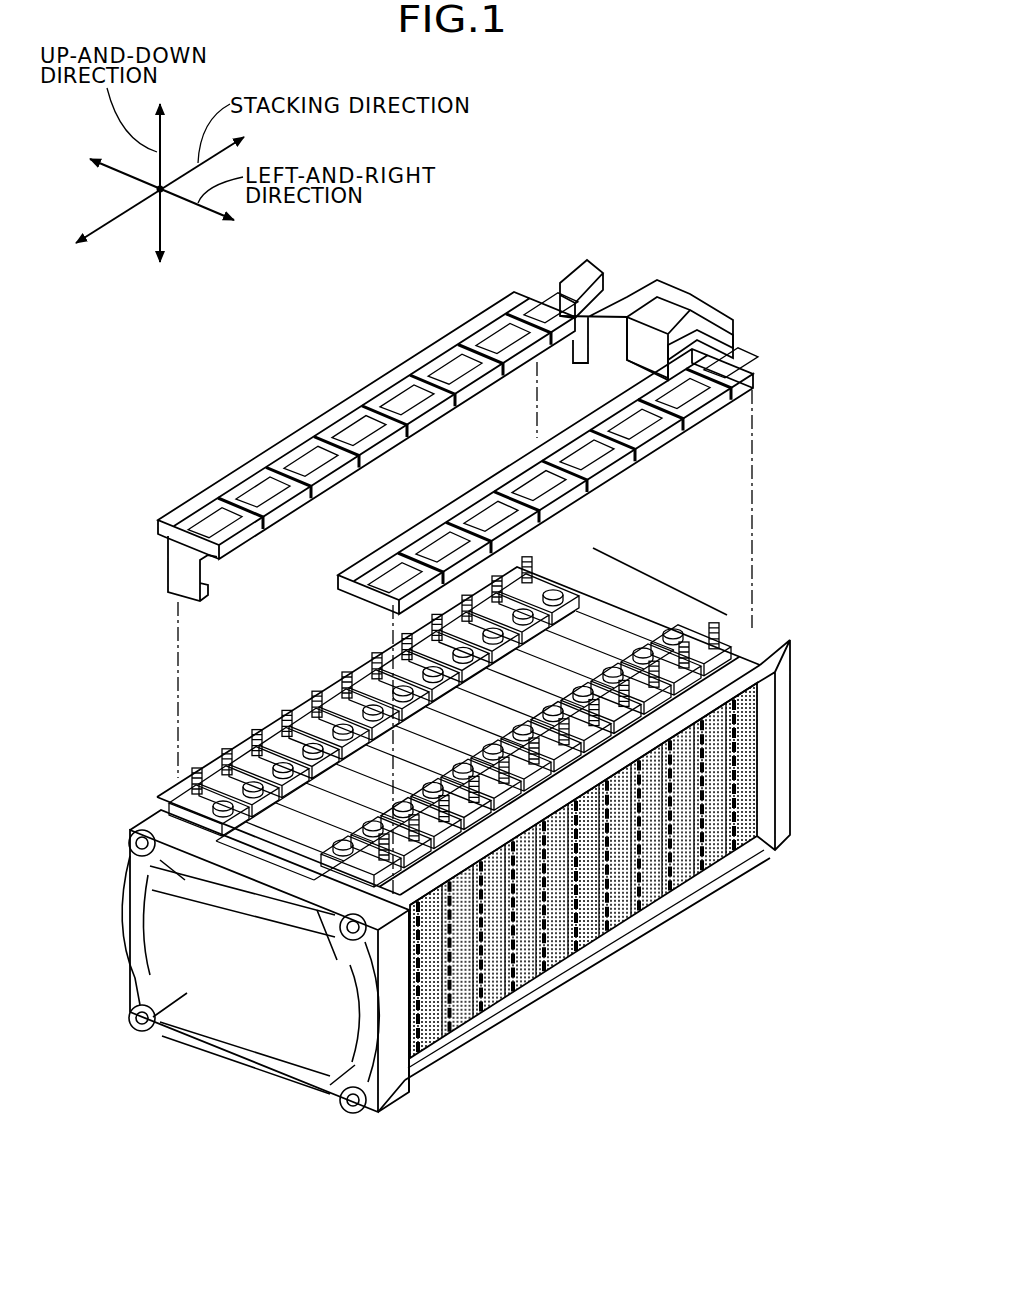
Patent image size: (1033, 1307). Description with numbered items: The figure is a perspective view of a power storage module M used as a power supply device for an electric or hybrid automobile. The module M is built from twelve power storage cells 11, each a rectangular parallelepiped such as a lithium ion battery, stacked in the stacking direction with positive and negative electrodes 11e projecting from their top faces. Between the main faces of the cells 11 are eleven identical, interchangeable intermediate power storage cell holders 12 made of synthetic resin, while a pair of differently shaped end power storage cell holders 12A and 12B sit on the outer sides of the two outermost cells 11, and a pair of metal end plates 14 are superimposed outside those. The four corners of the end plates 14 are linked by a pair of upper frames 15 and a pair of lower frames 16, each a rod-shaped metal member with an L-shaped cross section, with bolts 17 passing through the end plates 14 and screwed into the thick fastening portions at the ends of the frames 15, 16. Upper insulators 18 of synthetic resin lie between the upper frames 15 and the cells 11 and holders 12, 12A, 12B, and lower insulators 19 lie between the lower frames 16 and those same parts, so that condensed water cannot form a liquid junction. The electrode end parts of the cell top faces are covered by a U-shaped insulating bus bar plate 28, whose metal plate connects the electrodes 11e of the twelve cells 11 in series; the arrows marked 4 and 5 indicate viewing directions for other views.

The power storage module M is at (190, 445).
The view direction arrow for FIG. 4 is at (423, 303).
The view direction arrow for FIG. 5 is at (540, 1052).
The power storage cell 11 is at (407, 727).
The electrode 11e is at (263, 737).
The intermediate power storage cell holder 12 is at (560, 965).
The end power storage cell holder 12A is at (398, 1022).
The end power storage cell holder 12B is at (780, 747).
The end plate 14 is at (235, 1007).
The upper frame 15 is at (527, 777).
The lower frame 16 is at (632, 947).
The bolt 17 is at (128, 853).
The upper insulator 18 is at (600, 720).
The lower insulator 19 is at (713, 880).
The bus bar plate 28 is at (366, 378).